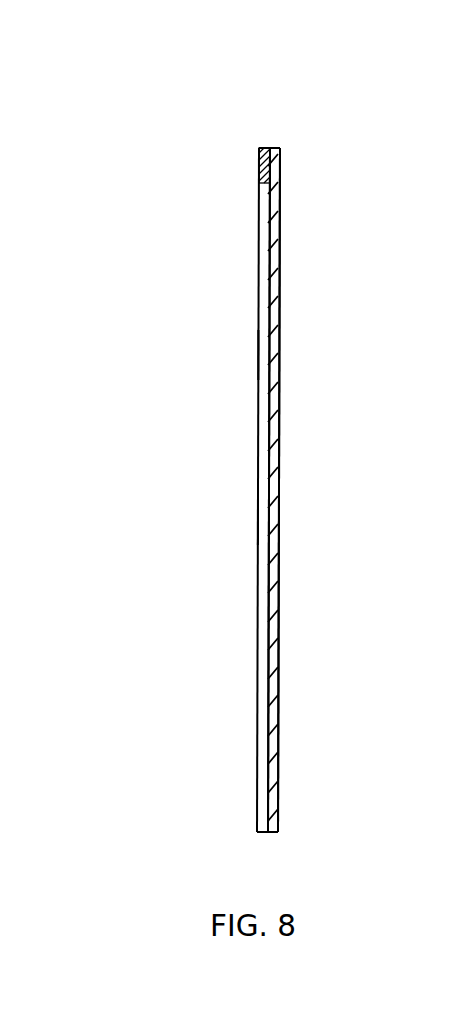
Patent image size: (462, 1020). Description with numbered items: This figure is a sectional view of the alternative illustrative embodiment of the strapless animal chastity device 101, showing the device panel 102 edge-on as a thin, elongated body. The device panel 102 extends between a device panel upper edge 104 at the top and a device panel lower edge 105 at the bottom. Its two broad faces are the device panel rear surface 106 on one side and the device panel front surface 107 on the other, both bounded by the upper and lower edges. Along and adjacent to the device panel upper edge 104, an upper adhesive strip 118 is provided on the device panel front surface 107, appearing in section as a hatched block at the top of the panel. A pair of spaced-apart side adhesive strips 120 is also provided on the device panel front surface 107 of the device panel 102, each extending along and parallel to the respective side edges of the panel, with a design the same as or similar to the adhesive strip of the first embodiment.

The animal chastity device 101 is at (196, 113).
The device panel 102 is at (293, 260).
The device panel upper edge 104 is at (277, 143).
The device panel lower edge 105 is at (273, 833).
The device panel rear surface 106 is at (282, 316).
The device panel front surface 107 is at (266, 462).
The upper adhesive strip 118 is at (258, 165).
The side adhesive strips 120 is at (258, 357).